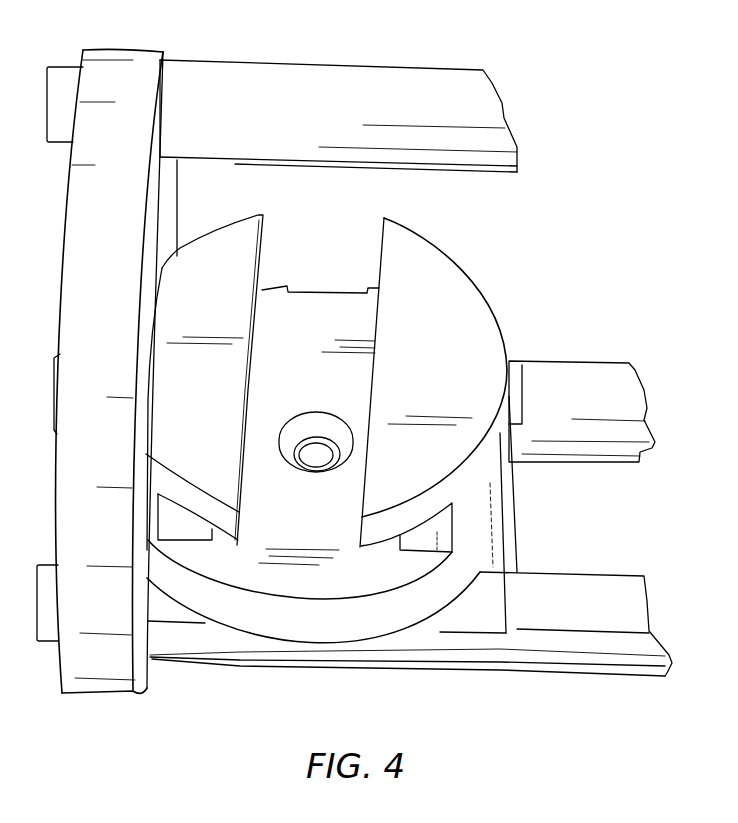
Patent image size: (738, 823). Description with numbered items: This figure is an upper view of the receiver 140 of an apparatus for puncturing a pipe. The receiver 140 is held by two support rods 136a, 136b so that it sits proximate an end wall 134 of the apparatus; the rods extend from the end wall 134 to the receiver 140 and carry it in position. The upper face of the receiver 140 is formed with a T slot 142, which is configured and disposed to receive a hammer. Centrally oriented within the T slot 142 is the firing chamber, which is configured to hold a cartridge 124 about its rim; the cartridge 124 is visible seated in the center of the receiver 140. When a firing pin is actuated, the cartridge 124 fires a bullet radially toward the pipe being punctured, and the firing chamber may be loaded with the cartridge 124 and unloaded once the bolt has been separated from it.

The cartridge 124 is at (291, 451).
The end wall 134 is at (158, 217).
The support rod 136a is at (610, 591).
The support rod 136b is at (595, 377).
The receiver 140 is at (425, 287).
The T slot 142 is at (444, 553).